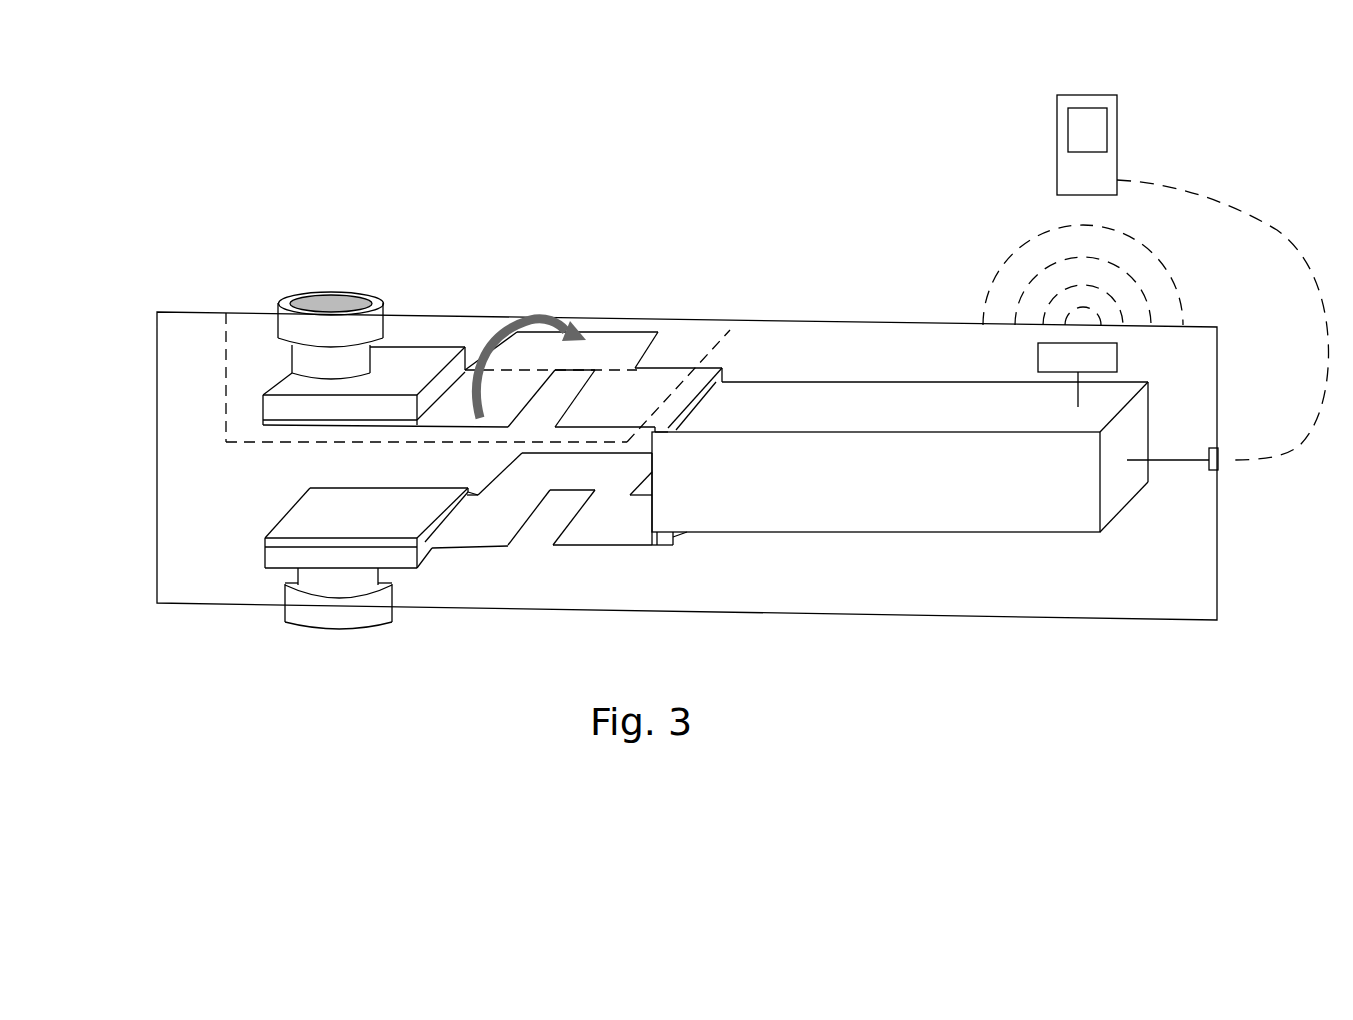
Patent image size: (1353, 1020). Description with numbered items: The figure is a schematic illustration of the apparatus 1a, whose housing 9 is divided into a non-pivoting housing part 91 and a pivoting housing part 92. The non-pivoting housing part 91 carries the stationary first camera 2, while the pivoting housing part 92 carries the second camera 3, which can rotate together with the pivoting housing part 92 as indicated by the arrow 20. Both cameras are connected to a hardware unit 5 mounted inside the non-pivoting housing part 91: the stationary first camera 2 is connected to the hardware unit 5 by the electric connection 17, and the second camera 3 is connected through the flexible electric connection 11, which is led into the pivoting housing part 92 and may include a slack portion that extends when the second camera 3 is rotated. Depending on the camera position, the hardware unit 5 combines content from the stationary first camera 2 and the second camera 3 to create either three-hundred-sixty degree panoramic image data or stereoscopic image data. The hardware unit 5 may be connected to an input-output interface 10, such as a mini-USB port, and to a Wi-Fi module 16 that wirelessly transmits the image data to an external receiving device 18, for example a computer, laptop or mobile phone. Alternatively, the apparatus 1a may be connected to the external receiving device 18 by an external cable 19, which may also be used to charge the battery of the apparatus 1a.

The apparatus 1a is at (264, 181).
The stationary first camera 2 is at (387, 642).
The second camera 3 is at (358, 283).
The hardware unit 5 is at (868, 512).
The housing 9 is at (142, 460).
The input-output interface 10 is at (1218, 464).
The flexible electric connection 11 is at (618, 318).
The Wi-Fi module 16 is at (1117, 358).
The electric connection 17 is at (720, 362).
The external receiving device 18 is at (1117, 162).
The external cable 19 is at (1262, 217).
The arrow 20 is at (524, 320).
The non-pivoting housing part 91 is at (212, 528).
The pivoting housing part 92 is at (246, 346).